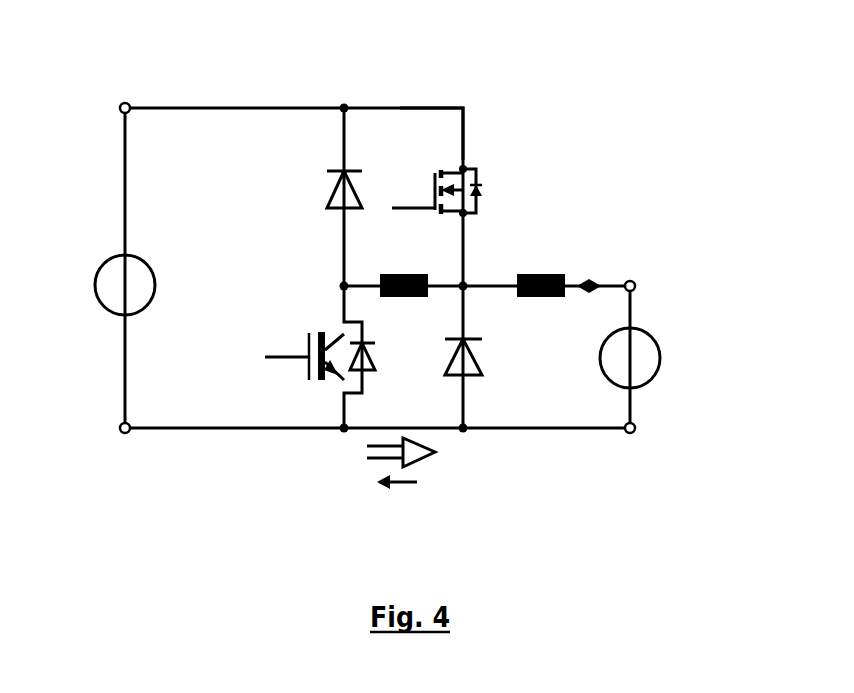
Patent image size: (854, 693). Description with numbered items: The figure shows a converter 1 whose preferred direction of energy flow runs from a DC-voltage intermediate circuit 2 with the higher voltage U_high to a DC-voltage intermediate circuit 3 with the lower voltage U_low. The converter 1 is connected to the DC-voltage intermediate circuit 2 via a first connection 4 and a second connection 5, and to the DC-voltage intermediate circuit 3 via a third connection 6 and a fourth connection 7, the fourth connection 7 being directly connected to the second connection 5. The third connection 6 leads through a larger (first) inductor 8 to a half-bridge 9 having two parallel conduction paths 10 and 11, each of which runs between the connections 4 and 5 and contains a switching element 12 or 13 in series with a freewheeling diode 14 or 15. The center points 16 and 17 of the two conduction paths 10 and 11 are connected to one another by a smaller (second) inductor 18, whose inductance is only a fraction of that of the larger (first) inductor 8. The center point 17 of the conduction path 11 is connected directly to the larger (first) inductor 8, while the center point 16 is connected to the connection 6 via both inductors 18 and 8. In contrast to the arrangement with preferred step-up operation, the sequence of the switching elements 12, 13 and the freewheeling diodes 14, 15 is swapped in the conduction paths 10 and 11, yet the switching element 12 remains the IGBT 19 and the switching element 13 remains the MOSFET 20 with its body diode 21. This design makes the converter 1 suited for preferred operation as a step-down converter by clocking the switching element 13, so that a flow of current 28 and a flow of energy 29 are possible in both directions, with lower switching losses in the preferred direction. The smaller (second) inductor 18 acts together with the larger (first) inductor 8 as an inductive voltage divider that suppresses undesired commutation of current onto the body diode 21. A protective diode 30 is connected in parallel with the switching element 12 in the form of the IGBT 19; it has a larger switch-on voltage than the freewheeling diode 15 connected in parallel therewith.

The converter 1 is at (610, 148).
The DC-voltage intermediate circuit 2 is at (117, 438).
The DC-voltage intermediate circuit 3 is at (633, 282).
The first connection 4 is at (123, 104).
The second connection 5 is at (127, 433).
The third connection 6 is at (634, 290).
The fourth connection 7 is at (632, 433).
The larger (first) inductor 8 is at (540, 275).
The half-bridge 9 is at (473, 135).
The conduction path 10 is at (346, 102).
The conduction path 11 is at (465, 102).
The switching element 12 is at (313, 387).
The switching element 13 is at (490, 180).
The freewheeling diode 14 is at (330, 185).
The freewheeling diode 15 is at (473, 378).
The center point 16 is at (343, 285).
The center point 17 is at (465, 288).
The smaller (second) inductor 18 is at (398, 275).
The IGBT 19 is at (293, 362).
The MOSFET 20 is at (480, 160).
The body diode 21 is at (478, 194).
The flow of current 28 is at (590, 280).
The flow of energy 29 is at (408, 495).
The protective diode 30 is at (383, 365).